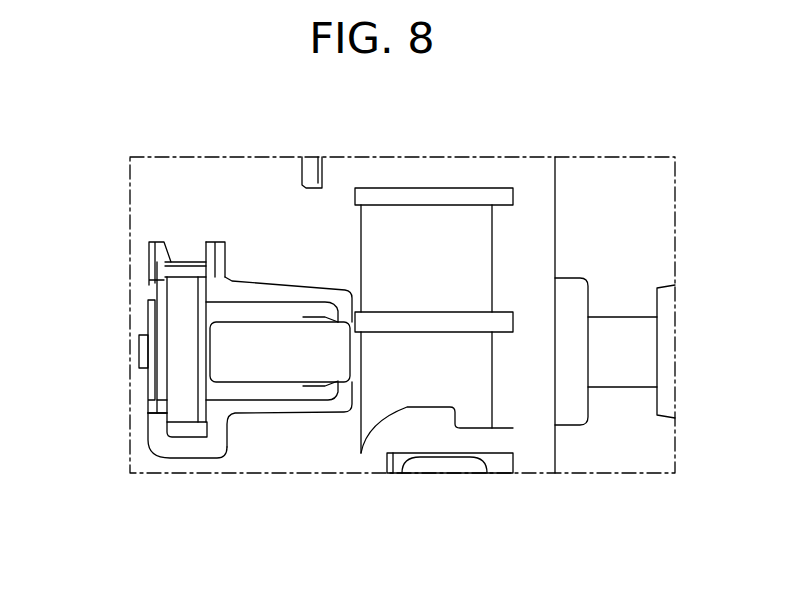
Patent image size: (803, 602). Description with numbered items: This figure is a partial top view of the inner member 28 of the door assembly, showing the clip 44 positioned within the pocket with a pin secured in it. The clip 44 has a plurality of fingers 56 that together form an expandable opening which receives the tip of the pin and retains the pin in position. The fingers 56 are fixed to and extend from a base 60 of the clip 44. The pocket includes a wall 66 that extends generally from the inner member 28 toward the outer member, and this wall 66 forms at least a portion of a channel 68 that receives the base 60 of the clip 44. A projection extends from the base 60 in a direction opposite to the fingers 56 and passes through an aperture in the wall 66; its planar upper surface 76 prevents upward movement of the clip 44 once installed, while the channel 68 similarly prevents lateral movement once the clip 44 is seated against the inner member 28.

The inner member 28 is at (434, 330).
The first clip 44 is at (163, 421).
The plurality of fingers 56 is at (275, 292).
The base 60 is at (170, 440).
The wall 66 is at (148, 330).
The channel 68 is at (190, 458).
The planar upper surface 76 is at (140, 347).